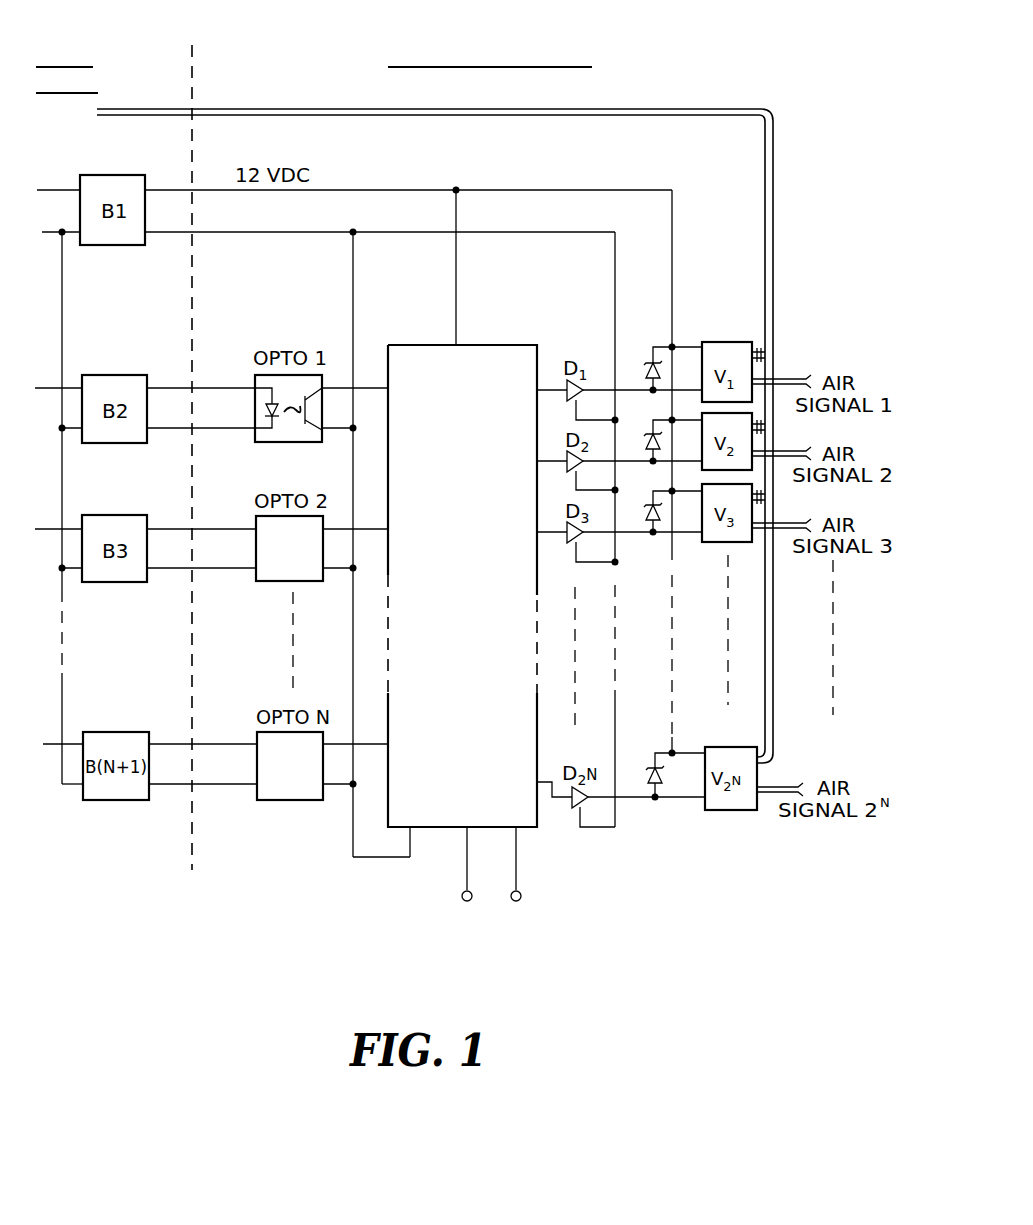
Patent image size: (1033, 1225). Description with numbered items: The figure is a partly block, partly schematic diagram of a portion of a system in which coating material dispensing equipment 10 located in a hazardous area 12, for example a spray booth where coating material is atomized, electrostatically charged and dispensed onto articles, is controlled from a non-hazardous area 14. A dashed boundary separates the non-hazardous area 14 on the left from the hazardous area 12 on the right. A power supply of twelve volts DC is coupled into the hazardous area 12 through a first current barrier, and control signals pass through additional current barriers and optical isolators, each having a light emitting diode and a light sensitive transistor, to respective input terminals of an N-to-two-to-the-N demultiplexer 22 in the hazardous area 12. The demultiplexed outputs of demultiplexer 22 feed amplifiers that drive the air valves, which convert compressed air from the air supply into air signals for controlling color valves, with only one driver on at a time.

The coating material dispensing equipment 10 is at (774, 90).
The hazardous area 12 is at (300, 60).
The non-hazardous area 14 is at (127, 58).
The N-to-2^N demultiplexer 22 is at (418, 874).